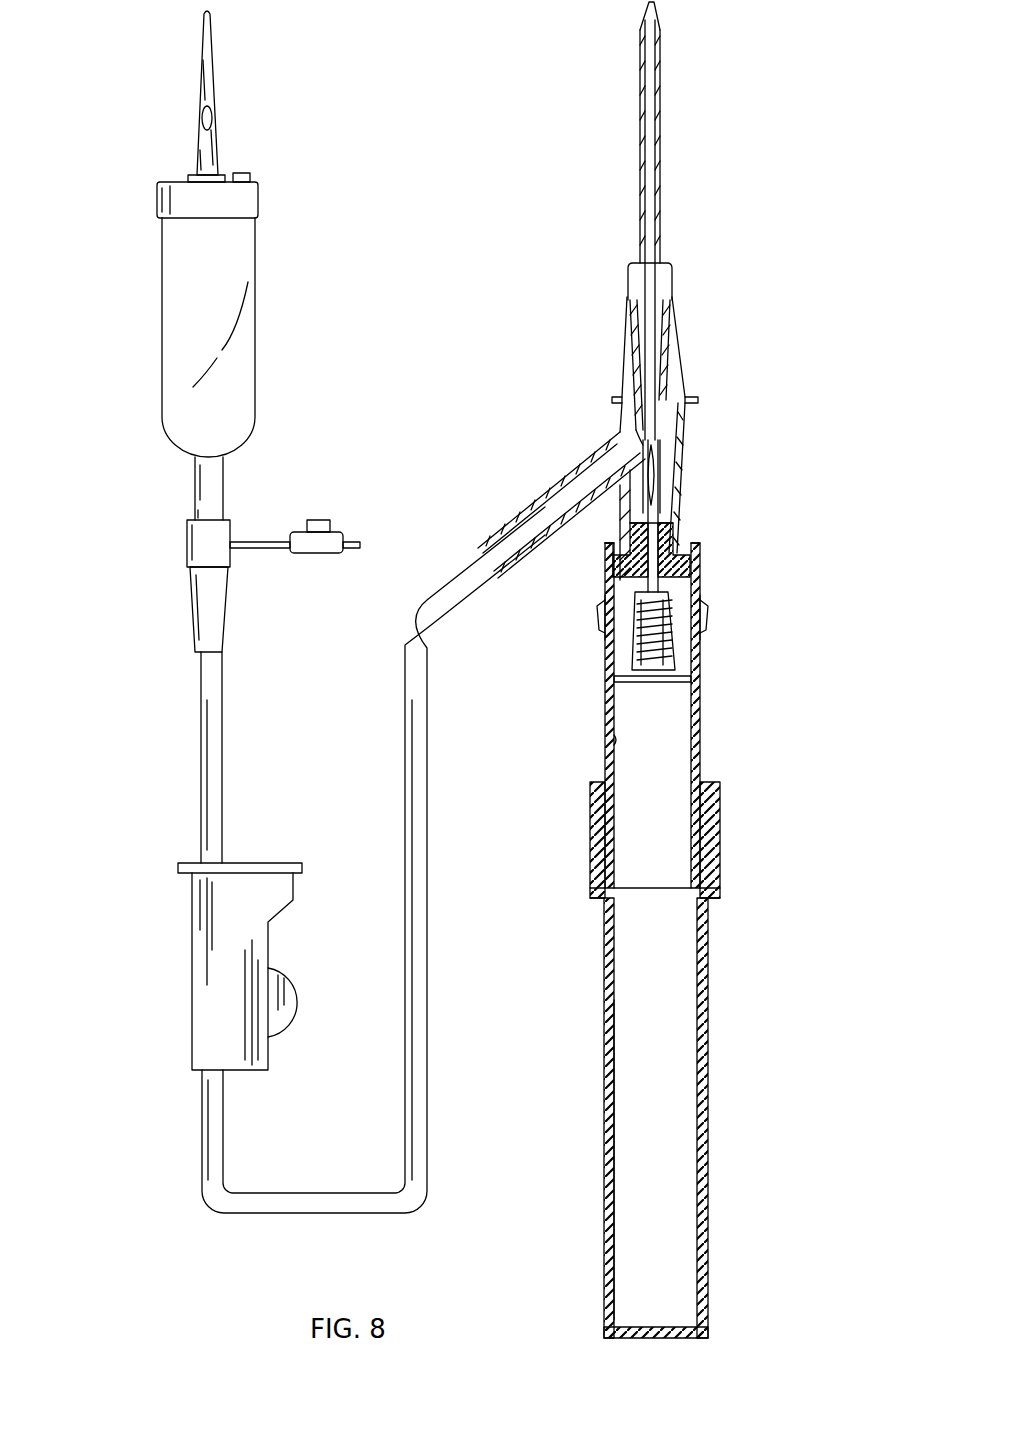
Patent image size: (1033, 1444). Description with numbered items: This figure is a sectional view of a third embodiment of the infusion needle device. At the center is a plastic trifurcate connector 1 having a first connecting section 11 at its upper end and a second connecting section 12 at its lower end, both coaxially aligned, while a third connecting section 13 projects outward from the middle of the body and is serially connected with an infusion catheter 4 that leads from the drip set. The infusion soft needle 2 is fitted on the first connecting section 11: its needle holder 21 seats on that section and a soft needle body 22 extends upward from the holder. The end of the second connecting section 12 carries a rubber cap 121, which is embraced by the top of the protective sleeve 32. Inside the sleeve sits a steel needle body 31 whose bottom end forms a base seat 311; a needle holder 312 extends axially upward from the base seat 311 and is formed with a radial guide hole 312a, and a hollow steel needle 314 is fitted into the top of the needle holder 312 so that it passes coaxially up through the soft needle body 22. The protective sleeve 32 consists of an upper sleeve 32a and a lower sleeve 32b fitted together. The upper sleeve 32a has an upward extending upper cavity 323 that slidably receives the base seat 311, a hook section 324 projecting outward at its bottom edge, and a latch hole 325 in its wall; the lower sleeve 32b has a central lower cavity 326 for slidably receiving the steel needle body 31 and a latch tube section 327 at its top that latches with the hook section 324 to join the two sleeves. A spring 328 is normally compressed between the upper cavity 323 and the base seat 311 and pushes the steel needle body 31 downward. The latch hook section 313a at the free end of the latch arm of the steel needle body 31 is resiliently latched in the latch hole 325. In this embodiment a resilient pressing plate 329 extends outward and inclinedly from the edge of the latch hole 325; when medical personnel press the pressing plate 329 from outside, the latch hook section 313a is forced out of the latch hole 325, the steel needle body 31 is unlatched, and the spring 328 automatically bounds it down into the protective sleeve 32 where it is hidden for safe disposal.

The trifurcate connector 1 is at (590, 458).
The infusion soft needle 2 is at (660, 297).
The infusion catheter 4 is at (458, 570).
The first connecting section 11 is at (679, 352).
The second connecting section 12 is at (687, 545).
The third connecting section 13 is at (540, 500).
The needle holder 21 is at (633, 333).
The soft needle body 22 is at (641, 140).
The steel needle body 31 is at (662, 472).
The protective sleeve 32 is at (805, 955).
The upper sleeve 32a is at (648, 715).
The lower sleeve 32b is at (656, 1118).
The rubber cap 121 is at (606, 565).
The base seat 311 is at (672, 688).
The needle holder 312 is at (673, 530).
The radial guide hole 312a is at (640, 417).
The latch hook section 313a is at (654, 624).
The steel needle 314 is at (652, 242).
The upper cavity 323 is at (607, 742).
The hook section 324 is at (598, 875).
The latch hole 325 is at (606, 636).
The lower cavity 326 is at (625, 1022).
The latch tube section 327 is at (598, 828).
The spring 328 is at (662, 655).
The resilient pressing plate 329 is at (600, 628).